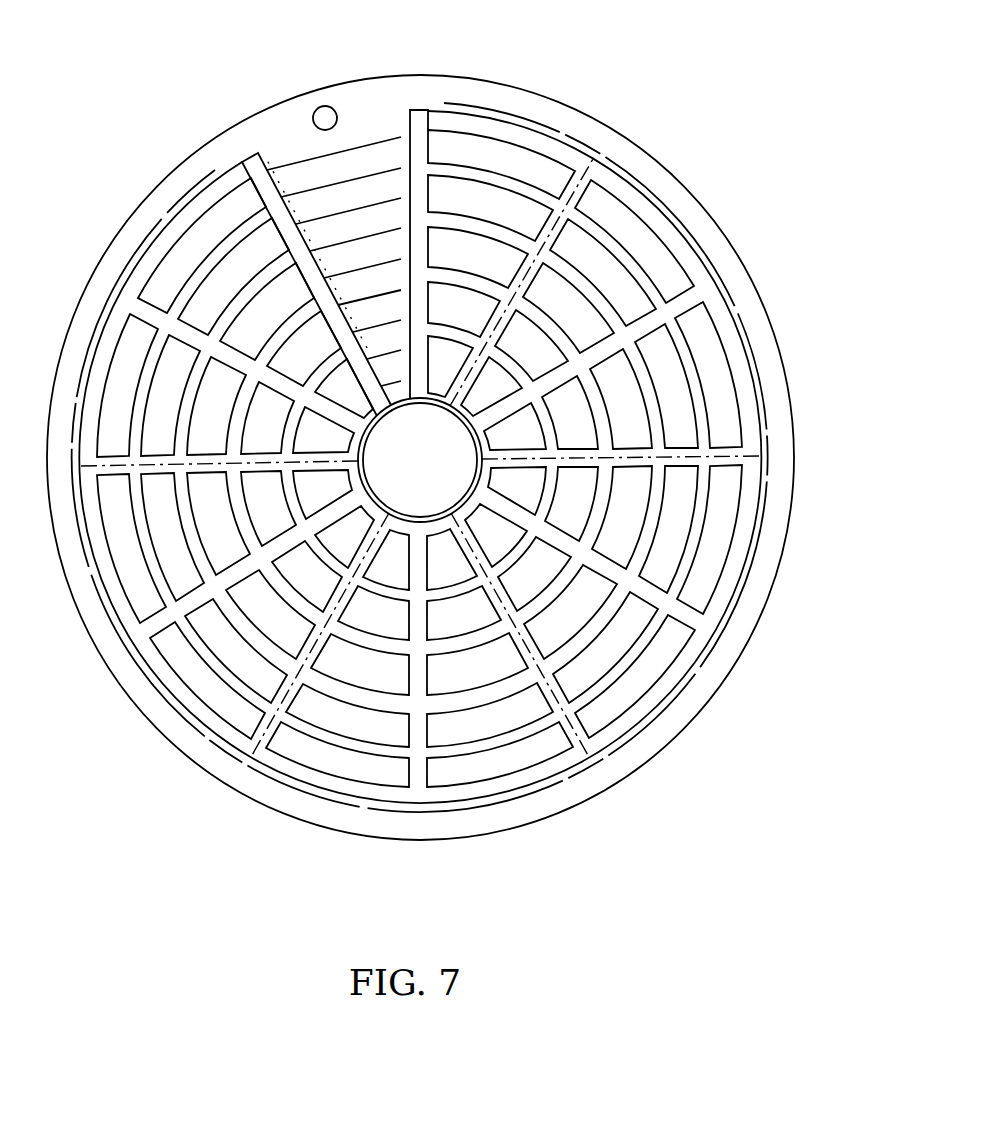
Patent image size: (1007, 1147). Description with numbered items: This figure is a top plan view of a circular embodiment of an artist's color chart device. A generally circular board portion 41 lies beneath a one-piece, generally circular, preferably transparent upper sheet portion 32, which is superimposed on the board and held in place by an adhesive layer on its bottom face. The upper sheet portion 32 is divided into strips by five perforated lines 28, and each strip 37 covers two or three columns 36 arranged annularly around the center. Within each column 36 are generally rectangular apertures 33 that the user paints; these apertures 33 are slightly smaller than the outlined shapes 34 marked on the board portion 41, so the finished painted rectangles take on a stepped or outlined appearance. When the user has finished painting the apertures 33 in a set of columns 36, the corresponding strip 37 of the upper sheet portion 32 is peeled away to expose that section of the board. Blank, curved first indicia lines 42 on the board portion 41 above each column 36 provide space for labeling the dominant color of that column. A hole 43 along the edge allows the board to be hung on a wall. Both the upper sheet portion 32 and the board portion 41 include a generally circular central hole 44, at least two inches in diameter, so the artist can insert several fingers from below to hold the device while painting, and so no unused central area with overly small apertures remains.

The perforated lines 28 is at (265, 740).
The upper sheet portion 32 is at (578, 182).
The apertures 33 is at (630, 237).
The outlined shapes 34 is at (460, 130).
The columns 36 is at (730, 352).
The strip 37 is at (330, 780).
The board portion 41 is at (512, 163).
The first indicia lines 42 is at (745, 583).
The hole 43 is at (322, 108).
The central hole 44 is at (444, 478).